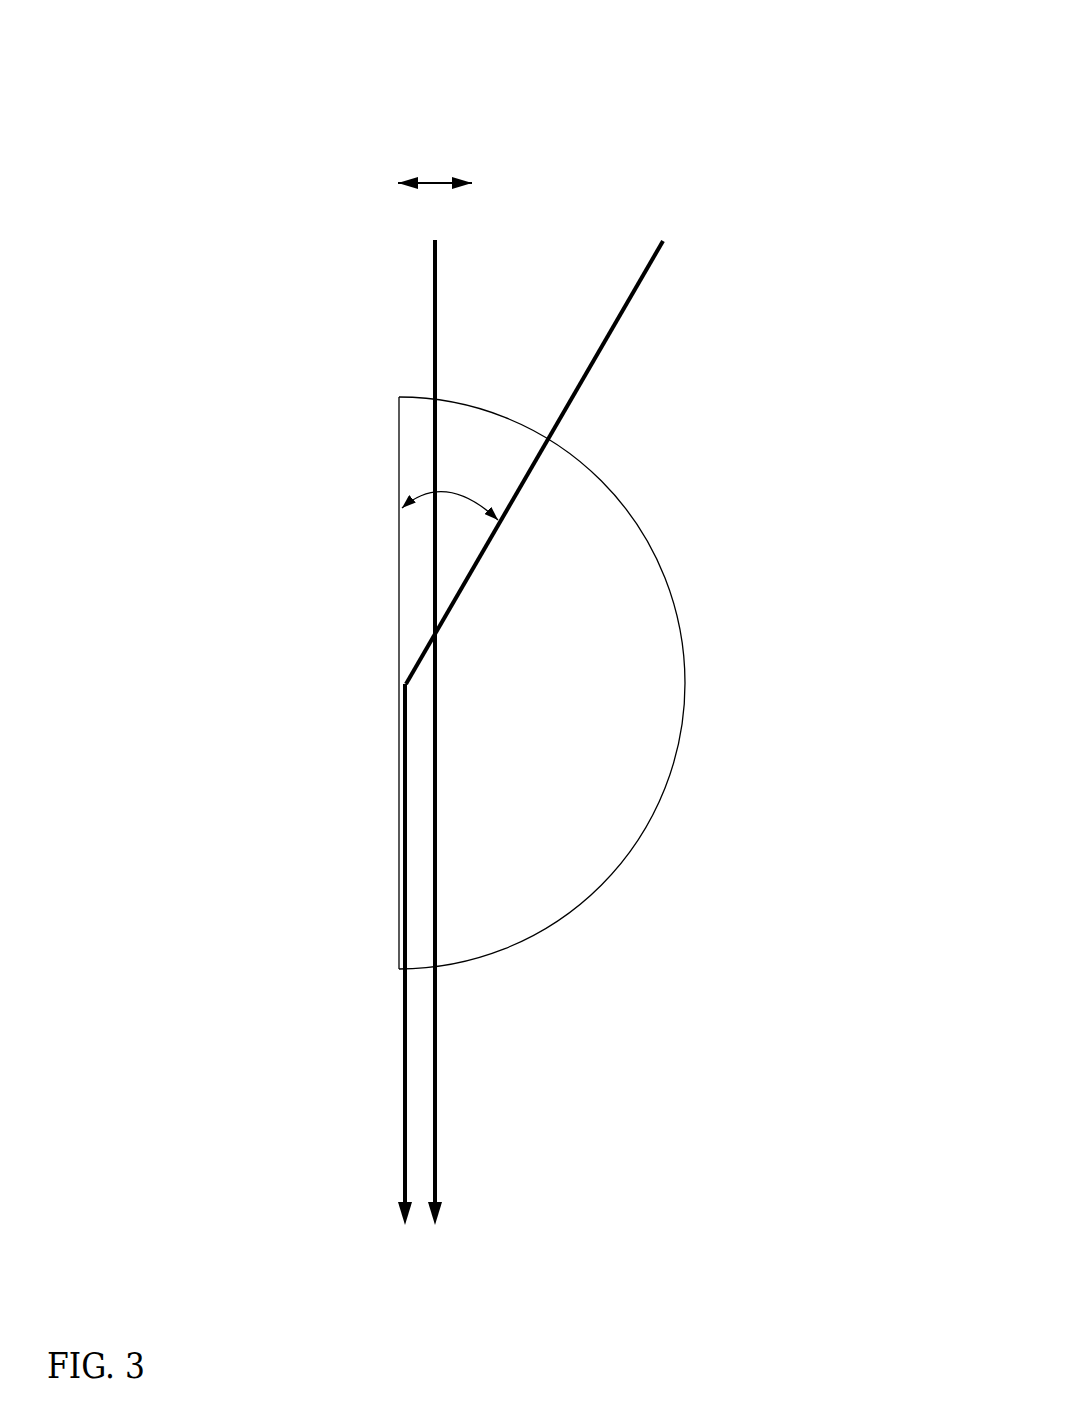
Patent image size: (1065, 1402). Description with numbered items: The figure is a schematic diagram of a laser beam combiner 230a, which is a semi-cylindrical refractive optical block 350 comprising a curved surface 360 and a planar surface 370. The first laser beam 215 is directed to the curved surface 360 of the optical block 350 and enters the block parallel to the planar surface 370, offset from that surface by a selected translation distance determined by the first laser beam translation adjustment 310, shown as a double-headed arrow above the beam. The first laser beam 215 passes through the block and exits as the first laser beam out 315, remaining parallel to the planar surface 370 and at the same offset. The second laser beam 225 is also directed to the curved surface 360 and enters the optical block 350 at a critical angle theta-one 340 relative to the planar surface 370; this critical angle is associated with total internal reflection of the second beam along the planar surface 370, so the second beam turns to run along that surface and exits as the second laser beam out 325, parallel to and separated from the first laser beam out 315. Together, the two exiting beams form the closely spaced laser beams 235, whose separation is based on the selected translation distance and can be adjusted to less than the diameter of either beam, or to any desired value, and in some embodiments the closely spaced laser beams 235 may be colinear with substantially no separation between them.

The laser beam combiner 230a is at (163, 48).
The laser beam 1 translation adjustment 310 is at (458, 160).
The first laser beam 215 is at (411, 325).
The second laser beam 225 is at (642, 311).
The critical angle θ1 340 is at (487, 486).
The refractive optical block 350 is at (700, 683).
The curved surface 360 is at (641, 838).
The planar surface 370 is at (399, 615).
The first laser beam out 315 is at (445, 1083).
The second laser beam out 325 is at (383, 1096).
The closely spaced laser beams 235 is at (472, 1183).